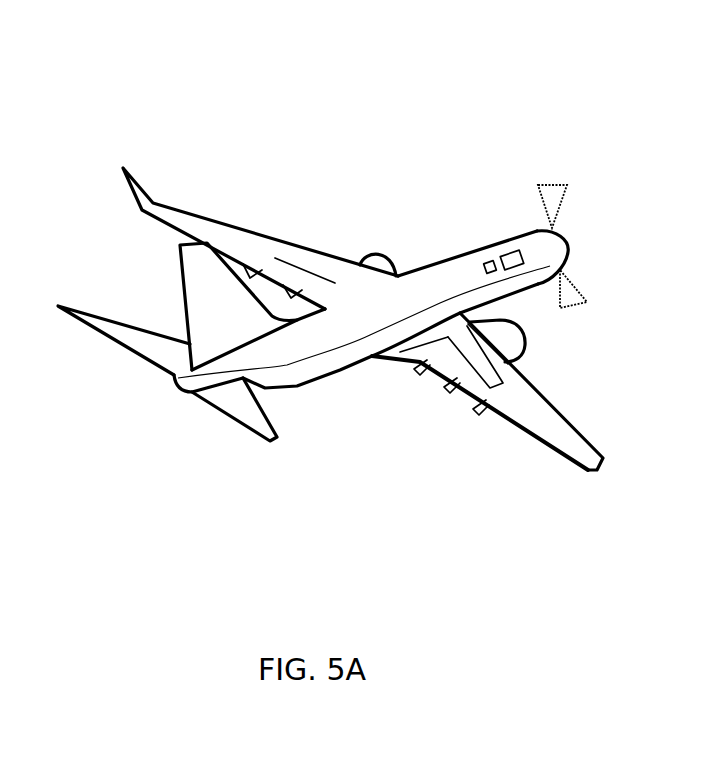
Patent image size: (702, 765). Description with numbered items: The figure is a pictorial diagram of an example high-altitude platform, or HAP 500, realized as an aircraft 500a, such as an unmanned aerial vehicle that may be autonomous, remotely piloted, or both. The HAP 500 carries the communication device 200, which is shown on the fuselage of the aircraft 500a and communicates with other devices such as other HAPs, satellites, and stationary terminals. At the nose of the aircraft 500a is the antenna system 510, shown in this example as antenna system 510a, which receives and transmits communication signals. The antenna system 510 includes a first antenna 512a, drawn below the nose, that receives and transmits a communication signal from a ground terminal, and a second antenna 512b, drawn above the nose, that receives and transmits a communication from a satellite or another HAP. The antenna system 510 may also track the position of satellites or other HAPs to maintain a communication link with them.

The high-altitude platform 500 is at (369, 258).
The aircraft 500a is at (369, 319).
The communication device 200 is at (507, 250).
The antenna system 510 is at (609, 239).
The antenna system 510a is at (572, 198).
The first antenna 512a is at (582, 286).
The second antenna 512b is at (551, 185).